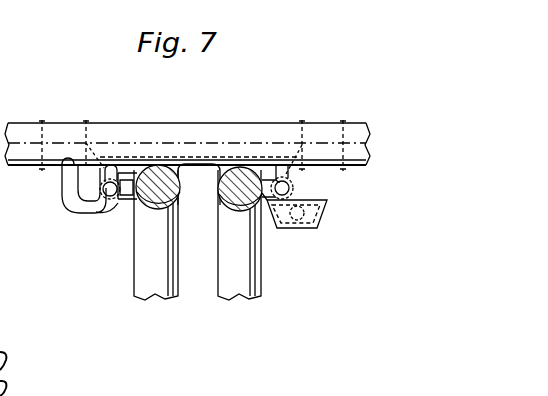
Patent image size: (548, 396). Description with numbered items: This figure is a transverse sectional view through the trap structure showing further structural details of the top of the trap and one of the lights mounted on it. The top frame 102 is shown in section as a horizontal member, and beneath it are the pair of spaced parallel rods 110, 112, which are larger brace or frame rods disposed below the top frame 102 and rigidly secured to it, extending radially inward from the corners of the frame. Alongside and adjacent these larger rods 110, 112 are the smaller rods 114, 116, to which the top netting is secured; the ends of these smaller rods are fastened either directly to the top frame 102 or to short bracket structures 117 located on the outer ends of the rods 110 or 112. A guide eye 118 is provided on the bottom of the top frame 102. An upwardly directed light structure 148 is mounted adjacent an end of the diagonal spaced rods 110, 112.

The top frame 102 is at (329, 131).
The rod 110 is at (237, 185).
The rod 112 is at (155, 190).
The smaller rod 114 is at (280, 182).
The smaller rod 116 is at (107, 204).
The bracket structure 117 is at (127, 188).
The guide eye 118 is at (72, 181).
The light structure 148 is at (296, 234).